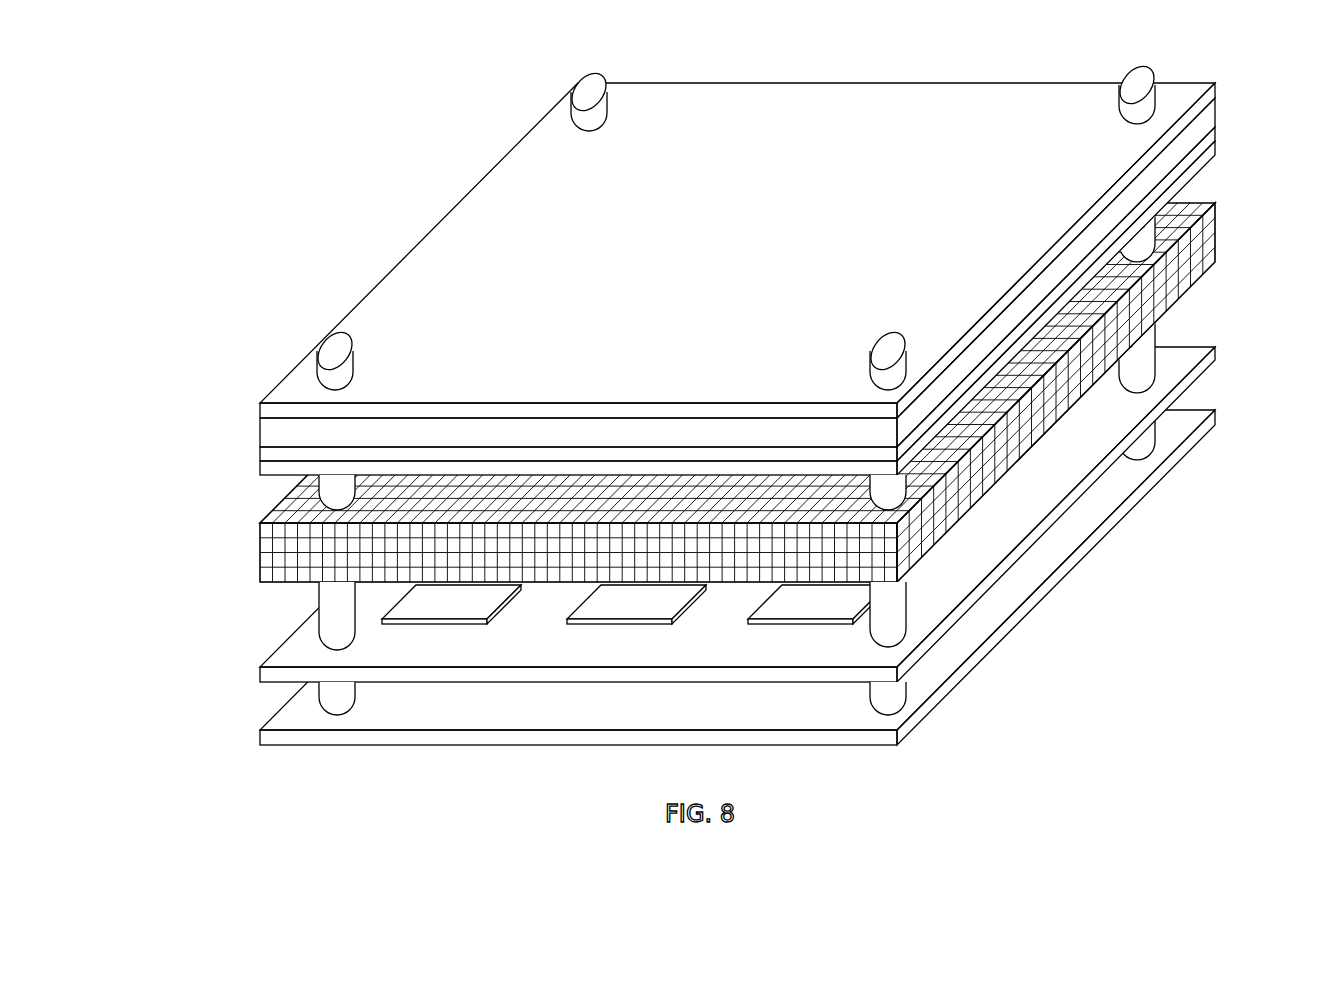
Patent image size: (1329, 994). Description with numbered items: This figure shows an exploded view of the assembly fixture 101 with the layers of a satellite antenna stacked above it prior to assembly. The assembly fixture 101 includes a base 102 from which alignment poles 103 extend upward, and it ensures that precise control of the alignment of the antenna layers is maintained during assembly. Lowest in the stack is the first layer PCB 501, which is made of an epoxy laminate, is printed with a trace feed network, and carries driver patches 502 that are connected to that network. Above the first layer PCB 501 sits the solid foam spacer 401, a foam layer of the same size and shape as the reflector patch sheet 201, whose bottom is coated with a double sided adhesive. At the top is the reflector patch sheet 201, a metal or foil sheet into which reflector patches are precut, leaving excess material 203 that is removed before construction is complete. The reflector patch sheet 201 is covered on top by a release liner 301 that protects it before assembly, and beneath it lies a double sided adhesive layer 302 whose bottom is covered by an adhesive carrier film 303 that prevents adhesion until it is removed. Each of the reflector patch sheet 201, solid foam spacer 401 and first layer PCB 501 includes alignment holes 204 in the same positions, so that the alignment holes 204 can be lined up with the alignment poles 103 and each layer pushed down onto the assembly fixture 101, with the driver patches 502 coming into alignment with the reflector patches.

The assembly fixture 101 is at (482, 733).
The base 102 is at (827, 746).
The alignment poles 103 is at (1150, 449).
The reflector patch sheet 201 is at (417, 246).
The excess material 203 is at (257, 438).
The alignment holes 204 is at (570, 127).
The release liner 301 is at (257, 410).
The double sided adhesive layer 302 is at (257, 453).
The adhesive carrier film 303 is at (257, 470).
The solid foam spacer 401 is at (259, 569).
The first layer PCB 501 is at (259, 680).
The driver patches 502 is at (827, 624).